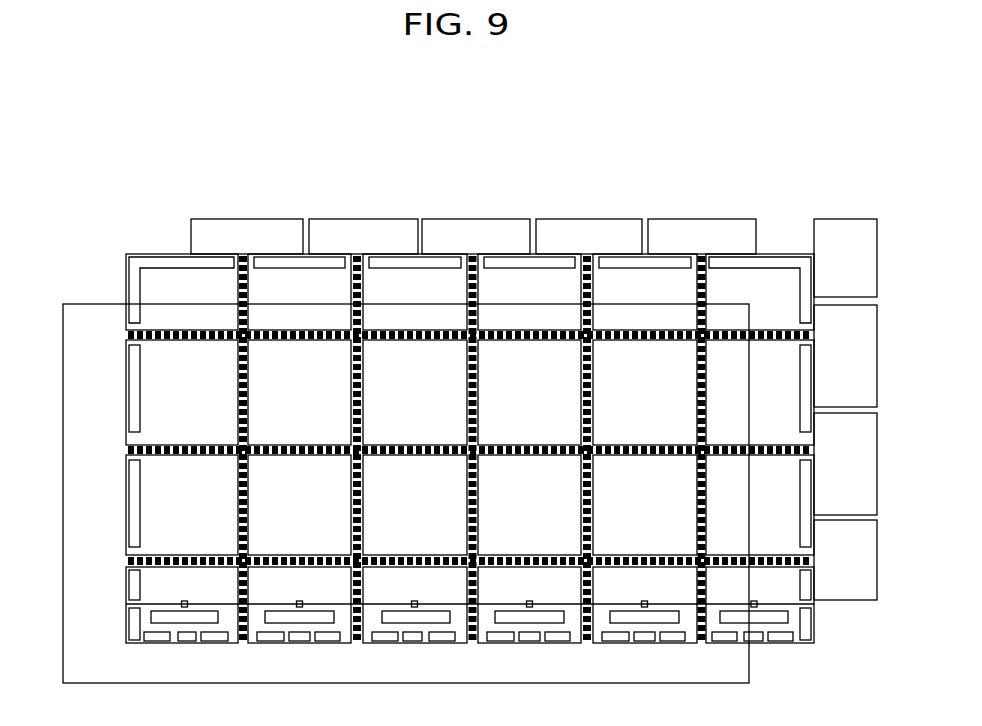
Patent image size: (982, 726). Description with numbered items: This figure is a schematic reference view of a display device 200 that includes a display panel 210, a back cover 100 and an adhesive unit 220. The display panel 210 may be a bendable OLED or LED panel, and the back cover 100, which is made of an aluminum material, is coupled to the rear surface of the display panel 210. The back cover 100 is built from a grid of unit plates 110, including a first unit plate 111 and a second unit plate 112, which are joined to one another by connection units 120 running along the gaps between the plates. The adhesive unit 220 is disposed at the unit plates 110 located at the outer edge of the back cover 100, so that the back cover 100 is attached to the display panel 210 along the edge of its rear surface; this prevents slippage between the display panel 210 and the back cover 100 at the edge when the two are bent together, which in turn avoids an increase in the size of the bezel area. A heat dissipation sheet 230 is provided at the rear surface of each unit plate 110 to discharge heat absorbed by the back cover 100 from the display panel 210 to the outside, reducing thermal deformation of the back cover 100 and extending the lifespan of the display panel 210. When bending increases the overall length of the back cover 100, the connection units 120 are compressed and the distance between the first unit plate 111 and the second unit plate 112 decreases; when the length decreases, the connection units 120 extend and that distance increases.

The back cover 100 is at (616, 254).
The unit plates 110 is at (275, 153).
The first unit plate 111 is at (183, 288).
The second unit plate 112 is at (293, 290).
The connection units 120 is at (353, 285).
The display device 200 is at (47, 101).
The display panel 210 is at (82, 302).
The adhesive unit 220 is at (750, 270).
The heat dissipation sheet 230 is at (846, 218).